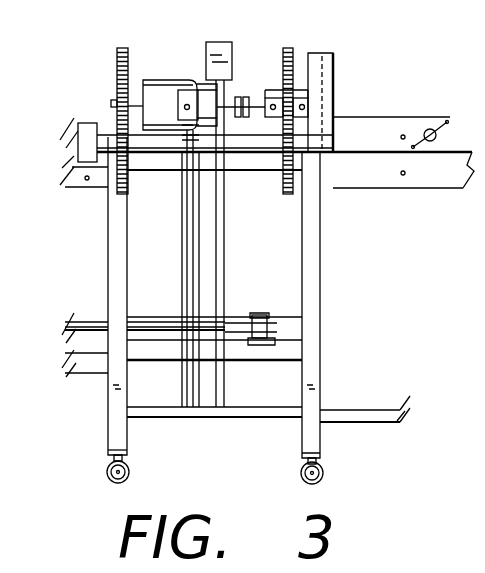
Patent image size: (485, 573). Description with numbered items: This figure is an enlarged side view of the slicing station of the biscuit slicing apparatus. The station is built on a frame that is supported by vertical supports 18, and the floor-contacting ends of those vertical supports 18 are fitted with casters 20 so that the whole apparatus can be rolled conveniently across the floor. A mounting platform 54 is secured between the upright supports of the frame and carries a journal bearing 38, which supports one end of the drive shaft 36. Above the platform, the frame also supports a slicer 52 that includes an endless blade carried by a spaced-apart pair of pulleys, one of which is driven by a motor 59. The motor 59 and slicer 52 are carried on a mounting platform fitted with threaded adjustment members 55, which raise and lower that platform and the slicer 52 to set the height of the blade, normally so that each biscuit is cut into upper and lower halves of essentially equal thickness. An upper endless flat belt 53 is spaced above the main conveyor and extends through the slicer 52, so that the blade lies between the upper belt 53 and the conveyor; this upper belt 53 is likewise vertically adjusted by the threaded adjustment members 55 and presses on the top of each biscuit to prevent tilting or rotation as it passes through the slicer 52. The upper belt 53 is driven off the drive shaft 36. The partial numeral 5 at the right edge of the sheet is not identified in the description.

The motor 59 is at (166, 79).
The threaded adjustment members 55 is at (294, 43).
The slicer 52 is at (326, 50).
The upper endless flat belt 53 is at (372, 117).
The drive shaft 36 is at (100, 318).
The journal bearing 38 is at (262, 313).
The mounting platform 54 is at (274, 362).
The vertical supports 18 is at (106, 405).
The casters 20 is at (107, 473).
The frame member 5 is at (478, 392).